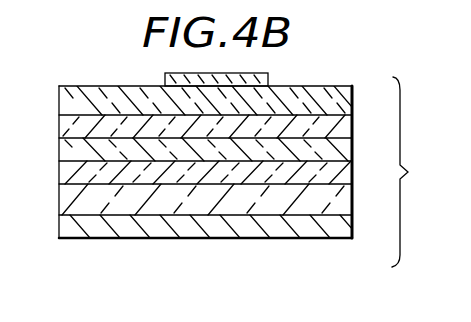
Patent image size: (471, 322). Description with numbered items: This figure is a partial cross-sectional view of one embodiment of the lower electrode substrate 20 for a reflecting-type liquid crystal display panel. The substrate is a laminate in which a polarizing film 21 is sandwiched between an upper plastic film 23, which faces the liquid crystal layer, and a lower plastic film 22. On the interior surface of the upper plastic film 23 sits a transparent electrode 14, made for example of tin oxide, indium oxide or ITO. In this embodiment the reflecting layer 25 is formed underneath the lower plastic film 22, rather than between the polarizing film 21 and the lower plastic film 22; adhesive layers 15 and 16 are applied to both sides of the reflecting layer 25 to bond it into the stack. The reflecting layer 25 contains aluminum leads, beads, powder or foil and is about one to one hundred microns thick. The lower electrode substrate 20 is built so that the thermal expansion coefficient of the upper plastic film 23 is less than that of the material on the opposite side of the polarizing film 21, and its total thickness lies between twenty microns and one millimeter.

The transparent electrode 14 is at (170, 74).
The upper plastic film 23 is at (352, 95).
The adhesive layer 15 is at (330, 129).
The adhesive layer 16 is at (333, 163).
The lower plastic film 22 is at (333, 204).
The reflecting layer 25 is at (333, 223).
The polarizing film 21 is at (70, 150).
The lower electrode substrate 20 is at (415, 172).